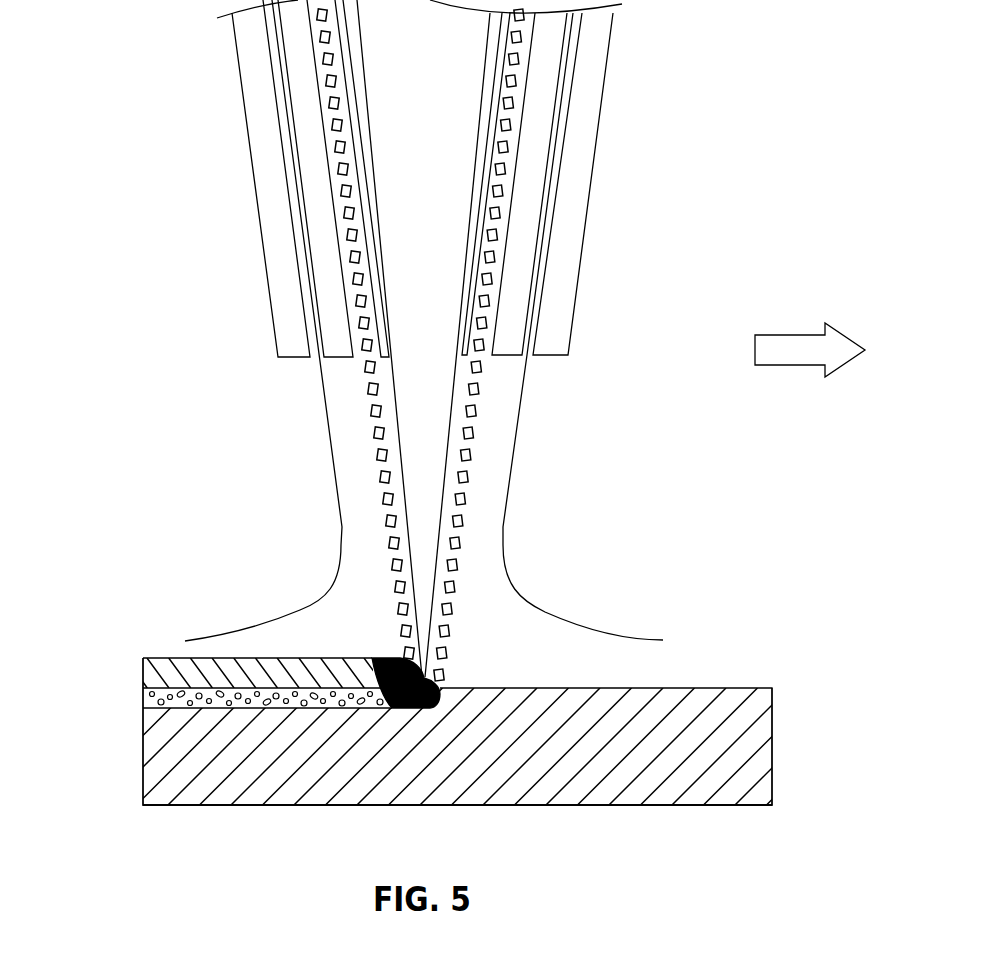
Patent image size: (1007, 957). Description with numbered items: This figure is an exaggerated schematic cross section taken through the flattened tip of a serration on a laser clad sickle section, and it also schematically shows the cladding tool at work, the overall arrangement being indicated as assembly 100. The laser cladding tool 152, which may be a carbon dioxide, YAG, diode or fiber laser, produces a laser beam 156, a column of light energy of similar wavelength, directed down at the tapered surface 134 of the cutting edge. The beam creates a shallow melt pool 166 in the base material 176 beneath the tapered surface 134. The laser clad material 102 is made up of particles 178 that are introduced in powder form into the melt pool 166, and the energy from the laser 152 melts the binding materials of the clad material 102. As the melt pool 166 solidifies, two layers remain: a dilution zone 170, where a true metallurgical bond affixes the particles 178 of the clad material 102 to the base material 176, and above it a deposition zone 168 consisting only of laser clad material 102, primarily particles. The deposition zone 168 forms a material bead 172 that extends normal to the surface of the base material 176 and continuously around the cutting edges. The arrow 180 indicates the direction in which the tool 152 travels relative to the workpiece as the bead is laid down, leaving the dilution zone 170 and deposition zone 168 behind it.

The additive manufacturing system 100 is at (160, 829).
The laser clad material 102 is at (490, 313).
The tapered surface 134 is at (752, 747).
The laser cladding tool 152 is at (594, 160).
The laser beam 156 is at (428, 492).
The melt pool 166 is at (390, 658).
The deposition zone 168 is at (155, 667).
The dilution zone 170 is at (150, 697).
The material bead 172 is at (260, 675).
The base material 176 is at (313, 786).
The particles 178 is at (481, 395).
The direction of travel 180 is at (772, 335).